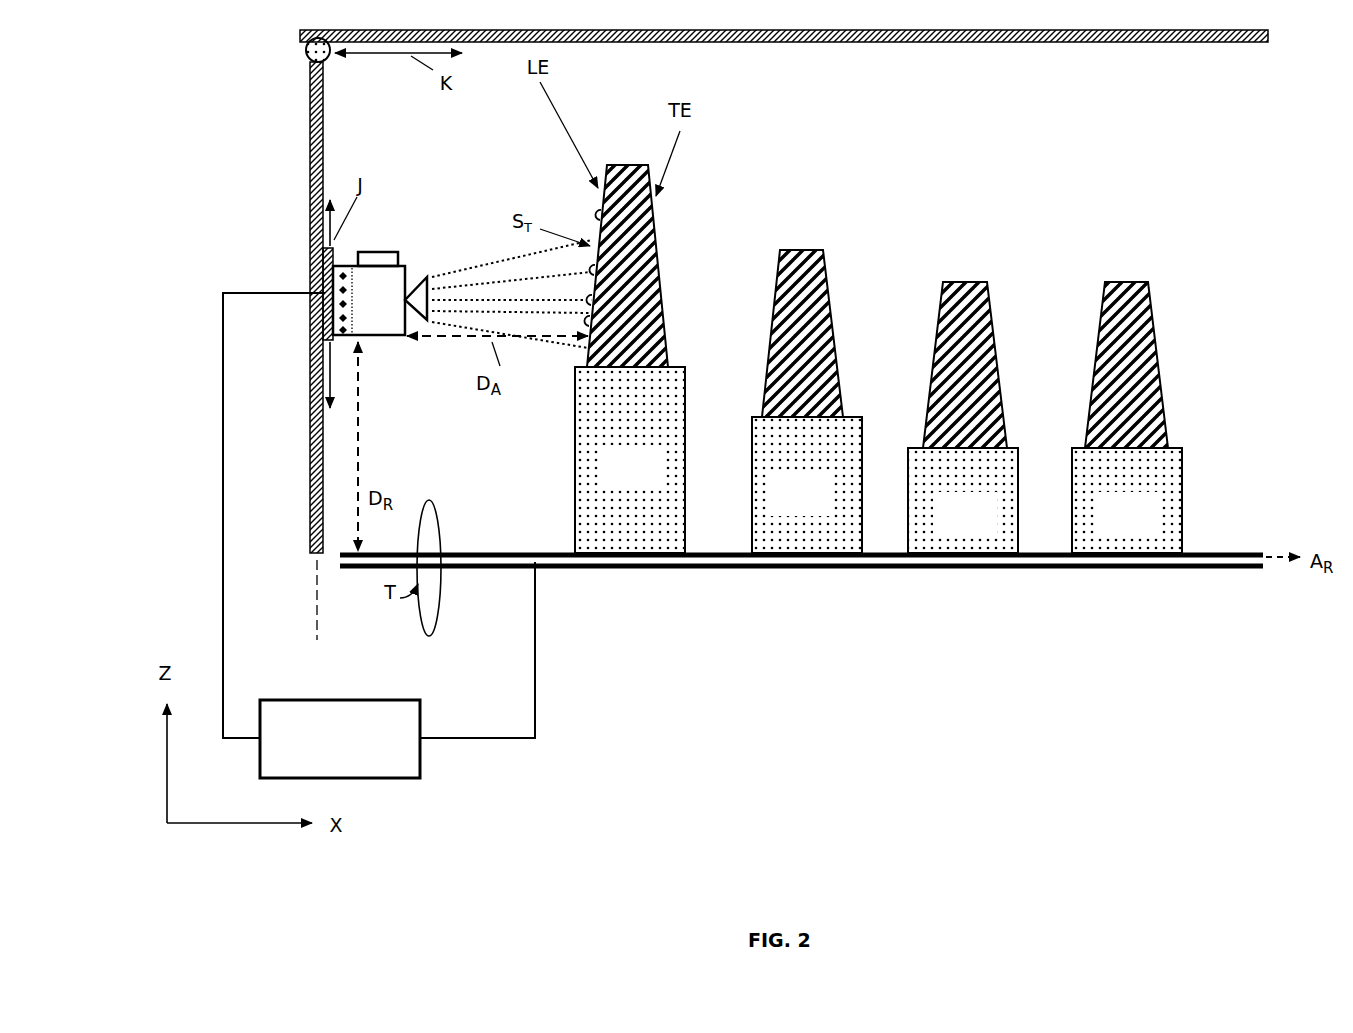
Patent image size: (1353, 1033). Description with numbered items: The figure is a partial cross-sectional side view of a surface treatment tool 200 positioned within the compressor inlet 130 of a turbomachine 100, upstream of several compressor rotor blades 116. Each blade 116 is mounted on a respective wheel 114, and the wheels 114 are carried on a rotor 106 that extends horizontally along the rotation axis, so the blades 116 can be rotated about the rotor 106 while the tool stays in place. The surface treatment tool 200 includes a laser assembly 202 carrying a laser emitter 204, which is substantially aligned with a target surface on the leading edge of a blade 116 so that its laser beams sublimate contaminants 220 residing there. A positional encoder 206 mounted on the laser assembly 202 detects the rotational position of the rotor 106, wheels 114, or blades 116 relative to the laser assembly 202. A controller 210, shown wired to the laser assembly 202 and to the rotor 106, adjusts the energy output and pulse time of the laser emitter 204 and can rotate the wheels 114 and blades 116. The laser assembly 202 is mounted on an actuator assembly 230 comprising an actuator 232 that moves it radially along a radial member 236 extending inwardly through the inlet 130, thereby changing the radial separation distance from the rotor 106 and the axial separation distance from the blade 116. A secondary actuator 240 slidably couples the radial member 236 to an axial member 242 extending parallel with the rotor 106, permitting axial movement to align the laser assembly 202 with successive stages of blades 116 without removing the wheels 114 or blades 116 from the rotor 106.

The turbomachine 100 is at (781, 598).
The rotor 106 is at (970, 558).
The wheel 114 is at (613, 476).
The compressor rotor blade 116 is at (627, 166).
The compressor inlet 130 is at (399, 129).
The surface treatment tool 200 is at (403, 267).
The laser assembly 202 is at (379, 318).
The laser emitter 204 is at (411, 296).
The positional encoder 206 is at (376, 258).
The controller 210 is at (322, 748).
The contaminants 220 is at (596, 214).
The actuator assembly 230 is at (292, 220).
The actuator 232 is at (313, 284).
The radial member 236 is at (312, 156).
The secondary actuator 240 is at (306, 54).
The axial member 242 is at (805, 43).